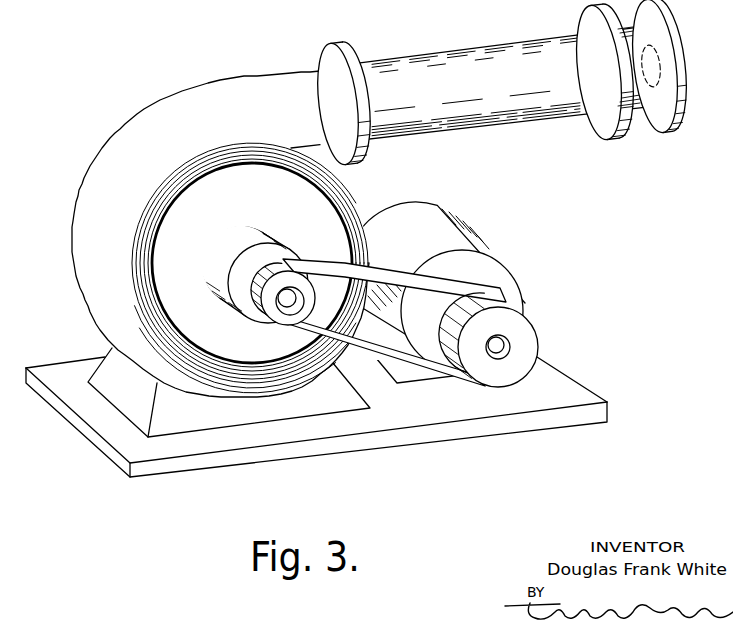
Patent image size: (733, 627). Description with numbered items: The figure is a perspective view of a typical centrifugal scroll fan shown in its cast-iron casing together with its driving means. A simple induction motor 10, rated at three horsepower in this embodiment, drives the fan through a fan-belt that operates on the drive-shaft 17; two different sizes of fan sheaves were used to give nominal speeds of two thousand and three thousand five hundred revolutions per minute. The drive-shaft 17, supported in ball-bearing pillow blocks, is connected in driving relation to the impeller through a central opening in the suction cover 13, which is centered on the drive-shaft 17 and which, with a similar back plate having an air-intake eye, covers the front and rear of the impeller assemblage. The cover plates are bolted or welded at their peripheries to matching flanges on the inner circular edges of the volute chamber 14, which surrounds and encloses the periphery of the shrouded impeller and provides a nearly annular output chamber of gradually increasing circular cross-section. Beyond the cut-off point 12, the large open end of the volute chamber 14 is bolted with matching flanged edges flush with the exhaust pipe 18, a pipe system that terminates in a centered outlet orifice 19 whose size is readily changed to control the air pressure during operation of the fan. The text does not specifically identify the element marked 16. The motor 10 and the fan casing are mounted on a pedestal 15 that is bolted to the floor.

The induction motor 10 is at (482, 244).
The cut-off point 12 is at (292, 151).
The suction cover 13 is at (191, 282).
The volute chamber 14 is at (92, 287).
The pedestal 15 is at (375, 449).
The bearing hub 16 is at (253, 232).
The drive-shaft 17 is at (288, 306).
The exhaust pipe 18 is at (440, 53).
The outlet orifice 19 is at (660, 60).